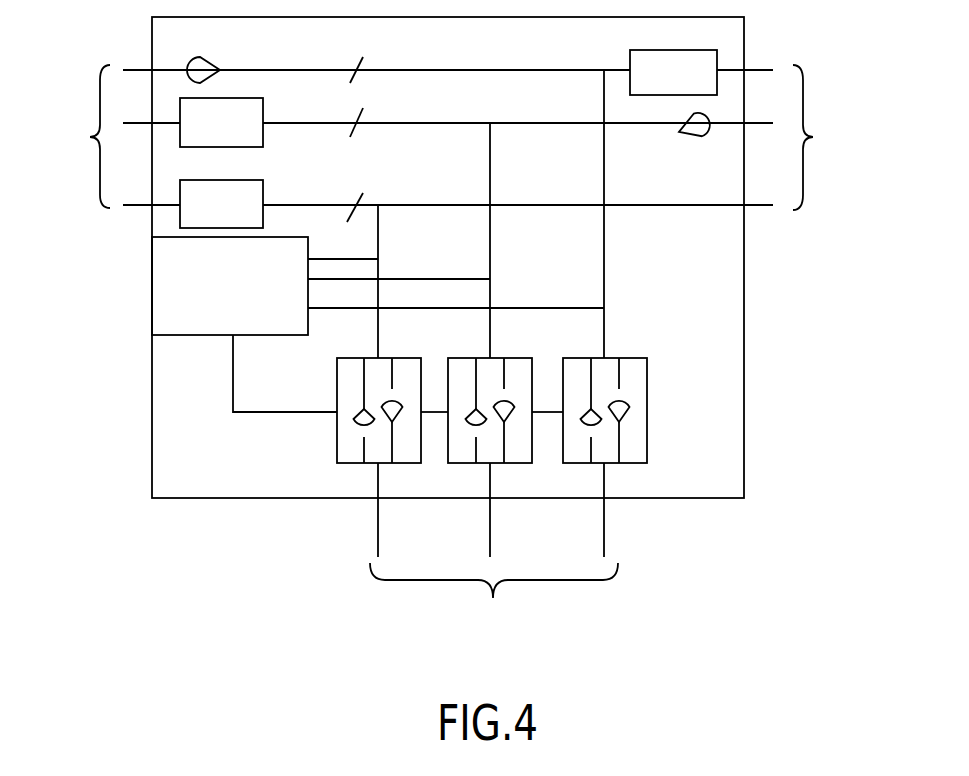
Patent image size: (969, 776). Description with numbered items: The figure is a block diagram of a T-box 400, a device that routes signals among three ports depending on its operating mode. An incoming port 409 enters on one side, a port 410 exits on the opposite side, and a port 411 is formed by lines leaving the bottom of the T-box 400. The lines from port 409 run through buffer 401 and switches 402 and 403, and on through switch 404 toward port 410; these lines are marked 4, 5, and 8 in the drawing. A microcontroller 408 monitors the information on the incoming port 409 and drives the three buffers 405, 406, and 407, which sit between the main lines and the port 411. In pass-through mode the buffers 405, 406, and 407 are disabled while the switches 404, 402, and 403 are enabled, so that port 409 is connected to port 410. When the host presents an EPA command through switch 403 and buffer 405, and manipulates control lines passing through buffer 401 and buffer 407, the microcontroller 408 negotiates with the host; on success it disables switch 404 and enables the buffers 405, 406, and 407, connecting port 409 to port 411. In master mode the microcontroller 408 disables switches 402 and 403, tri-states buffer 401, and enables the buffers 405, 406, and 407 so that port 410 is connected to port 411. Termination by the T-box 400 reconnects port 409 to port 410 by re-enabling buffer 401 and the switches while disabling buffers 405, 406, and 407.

The T-box 400 is at (663, 498).
The buffer 401 is at (205, 56).
The switch 402 is at (265, 108).
The switch 403 is at (265, 187).
The switch 404 is at (630, 53).
The buffer 405 is at (337, 452).
The buffer 406 is at (470, 358).
The buffer 407 is at (628, 357).
The microcontroller 408 is at (200, 335).
The port 409 is at (697, 164).
The port 410 is at (830, 137).
The port 411 is at (494, 354).
The line 4 is at (362, 56).
The line 5 is at (362, 108).
The line 8 is at (357, 191).